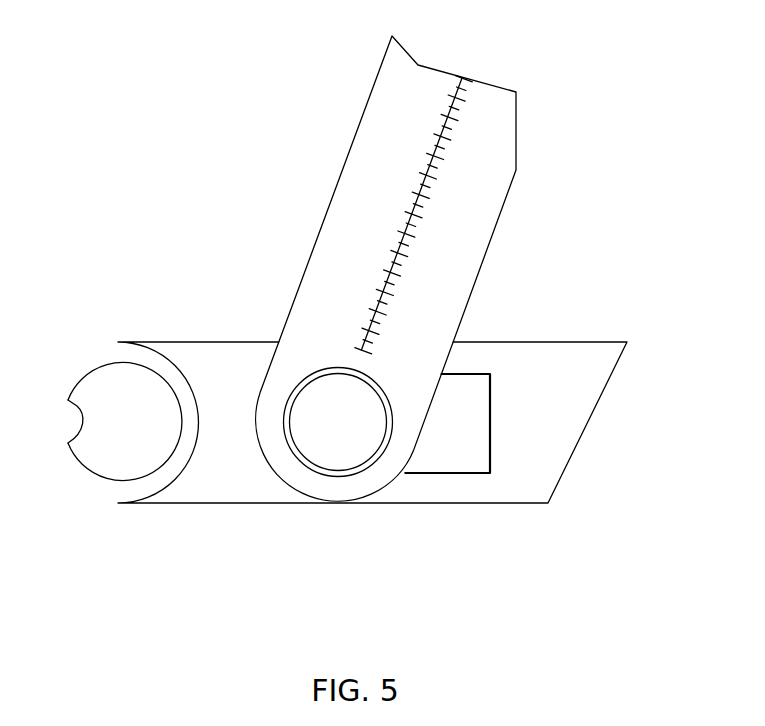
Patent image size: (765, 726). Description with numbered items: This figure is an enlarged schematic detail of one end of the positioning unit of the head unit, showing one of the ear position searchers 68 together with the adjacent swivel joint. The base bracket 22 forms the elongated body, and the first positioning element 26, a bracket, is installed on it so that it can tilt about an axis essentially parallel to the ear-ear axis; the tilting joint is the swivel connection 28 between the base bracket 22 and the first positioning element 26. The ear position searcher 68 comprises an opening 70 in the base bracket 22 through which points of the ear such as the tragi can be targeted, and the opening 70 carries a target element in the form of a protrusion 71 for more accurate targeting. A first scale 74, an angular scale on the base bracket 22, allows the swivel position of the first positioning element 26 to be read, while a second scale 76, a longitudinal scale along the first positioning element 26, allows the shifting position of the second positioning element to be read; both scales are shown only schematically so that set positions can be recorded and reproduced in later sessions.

The base bracket 22 is at (509, 488).
The first positioning element 26 is at (480, 226).
The swivel connection 28 is at (336, 490).
The ear position searcher 68 is at (161, 487).
The opening 70 is at (123, 420).
The protrusion 71 is at (80, 398).
The first scale 74 is at (472, 403).
The second scale 76 is at (378, 211).